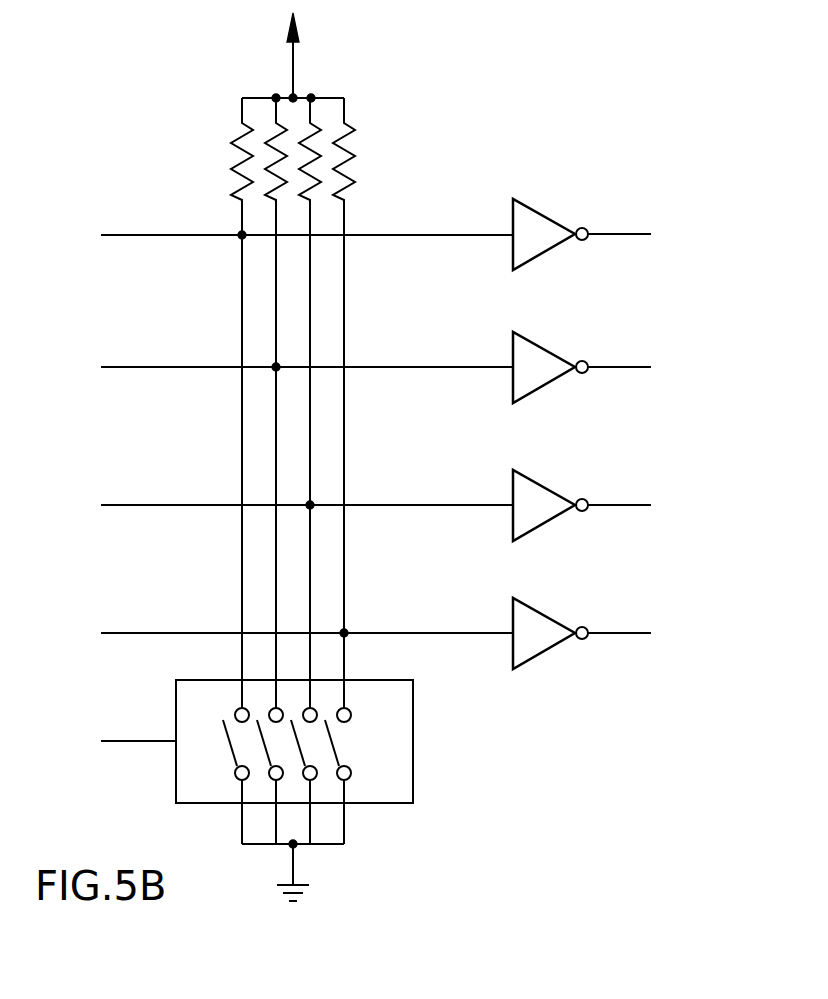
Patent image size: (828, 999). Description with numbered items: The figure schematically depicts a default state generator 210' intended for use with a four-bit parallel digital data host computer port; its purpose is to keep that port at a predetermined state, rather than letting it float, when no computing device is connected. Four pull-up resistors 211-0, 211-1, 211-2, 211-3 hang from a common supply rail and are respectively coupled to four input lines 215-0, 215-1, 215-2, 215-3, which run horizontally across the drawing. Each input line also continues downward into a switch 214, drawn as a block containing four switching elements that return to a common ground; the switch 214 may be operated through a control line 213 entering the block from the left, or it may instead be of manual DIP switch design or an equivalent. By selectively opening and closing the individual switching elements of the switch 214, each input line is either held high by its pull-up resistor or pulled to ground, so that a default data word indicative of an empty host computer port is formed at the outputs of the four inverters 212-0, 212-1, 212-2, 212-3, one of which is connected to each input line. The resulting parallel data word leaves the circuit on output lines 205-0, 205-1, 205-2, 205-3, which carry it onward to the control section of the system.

The default state generator 210' is at (403, 61).
The pull-up resistor 211-0 is at (243, 152).
The pull-up resistor 211-1 is at (277, 133).
The pull-up resistor 211-2 is at (313, 127).
The pull-up resistor 211-3 is at (348, 167).
The input line 215-0 is at (193, 235).
The input line 215-1 is at (193, 367).
The input line 215-2 is at (193, 505).
The input line 215-3 is at (193, 633).
The inverter 212-0 is at (535, 211).
The inverter 212-1 is at (535, 343).
The inverter 212-2 is at (535, 474).
The inverter 212-3 is at (535, 611).
The output line 205-0 is at (602, 234).
The output line 205-1 is at (602, 367).
The output line 205-2 is at (606, 505).
The output line 205-3 is at (602, 633).
The control line 213 is at (135, 741).
The switch 214 is at (413, 754).